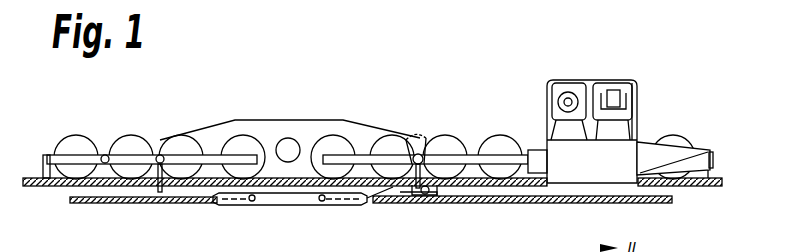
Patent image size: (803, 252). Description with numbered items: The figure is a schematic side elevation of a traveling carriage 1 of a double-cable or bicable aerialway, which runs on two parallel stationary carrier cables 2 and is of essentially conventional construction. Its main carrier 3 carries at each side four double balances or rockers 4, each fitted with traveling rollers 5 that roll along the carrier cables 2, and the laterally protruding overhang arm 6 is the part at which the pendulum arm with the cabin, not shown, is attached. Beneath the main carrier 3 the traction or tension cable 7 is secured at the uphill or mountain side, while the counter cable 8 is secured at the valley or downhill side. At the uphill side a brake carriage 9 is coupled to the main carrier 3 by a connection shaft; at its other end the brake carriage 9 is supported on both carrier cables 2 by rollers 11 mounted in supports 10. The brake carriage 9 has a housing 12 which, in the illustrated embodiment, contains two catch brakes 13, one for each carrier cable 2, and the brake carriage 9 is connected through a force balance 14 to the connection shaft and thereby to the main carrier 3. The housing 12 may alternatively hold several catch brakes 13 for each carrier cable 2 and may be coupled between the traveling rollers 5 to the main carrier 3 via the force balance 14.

The traveling carriage 1 is at (279, 134).
The carrier cable 2 is at (33, 186).
The main carrier 3 is at (350, 132).
The double balance 4 is at (60, 158).
The traveling roller 5 is at (125, 143).
The overhang arm 6 is at (283, 158).
The traction cable 7 is at (488, 199).
The counter cable 8 is at (117, 199).
The brake carriage 9 is at (608, 102).
The support 10 is at (695, 157).
The roller 11 is at (683, 140).
The housing 12 is at (580, 77).
The catch brake 13 is at (613, 88).
The force balance 14 is at (527, 145).